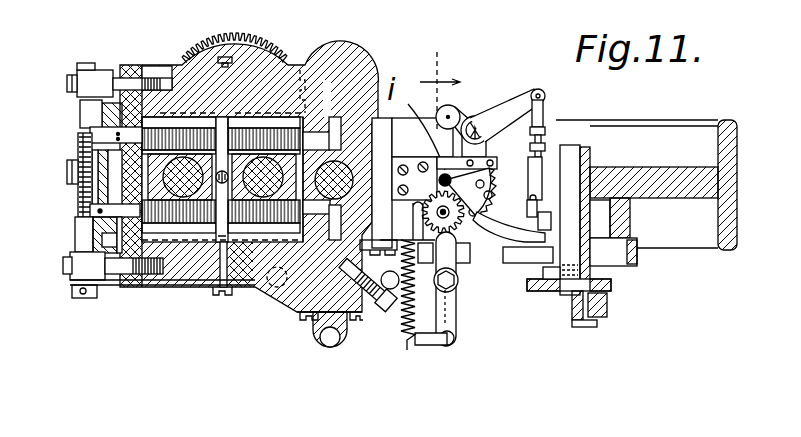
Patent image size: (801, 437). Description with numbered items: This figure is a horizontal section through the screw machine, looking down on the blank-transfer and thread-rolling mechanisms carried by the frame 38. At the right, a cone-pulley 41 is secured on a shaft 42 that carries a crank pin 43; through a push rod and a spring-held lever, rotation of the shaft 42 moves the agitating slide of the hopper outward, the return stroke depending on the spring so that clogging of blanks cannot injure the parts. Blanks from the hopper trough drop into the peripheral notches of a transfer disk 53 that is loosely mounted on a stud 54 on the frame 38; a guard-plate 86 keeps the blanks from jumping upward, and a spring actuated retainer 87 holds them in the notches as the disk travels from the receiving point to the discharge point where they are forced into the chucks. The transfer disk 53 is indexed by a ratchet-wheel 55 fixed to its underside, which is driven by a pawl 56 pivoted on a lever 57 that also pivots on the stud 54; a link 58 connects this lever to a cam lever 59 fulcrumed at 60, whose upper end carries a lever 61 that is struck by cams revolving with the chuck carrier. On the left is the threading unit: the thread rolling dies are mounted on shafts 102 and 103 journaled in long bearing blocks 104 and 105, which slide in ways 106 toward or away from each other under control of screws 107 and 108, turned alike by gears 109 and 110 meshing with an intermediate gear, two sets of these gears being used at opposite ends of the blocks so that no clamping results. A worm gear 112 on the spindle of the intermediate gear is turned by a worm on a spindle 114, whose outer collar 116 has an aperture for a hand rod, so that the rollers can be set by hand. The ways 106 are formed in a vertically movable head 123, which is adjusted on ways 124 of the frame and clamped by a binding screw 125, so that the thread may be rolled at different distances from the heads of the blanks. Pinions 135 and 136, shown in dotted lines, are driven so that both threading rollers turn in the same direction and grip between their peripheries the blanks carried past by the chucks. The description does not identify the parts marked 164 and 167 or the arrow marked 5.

The section line 5 is at (440, 77).
The frame 38 is at (730, 190).
The cone-pulley 41 is at (630, 264).
The shaft 42 is at (567, 177).
The crank pin 43 is at (582, 327).
The transfer disk 53 is at (455, 235).
The stud 54 is at (397, 327).
The ratchet-wheel 55 is at (441, 290).
The pawl 56 is at (397, 316).
The lever 57 is at (493, 220).
The link 58 is at (543, 114).
The cam lever 59 is at (513, 103).
The fulcrum 60 is at (480, 118).
The lever 61 is at (453, 108).
The guard-plate 86 is at (470, 158).
The spring actuated retainer 87 is at (545, 152).
The shaft 102 is at (153, 287).
The shaft 103 is at (255, 289).
The bearing block 104 is at (163, 77).
The bearing block 105 is at (264, 128).
The ways 106 is at (221, 128).
The screw 107 is at (183, 31).
The screw 108 is at (183, 282).
The gear 109 is at (98, 98).
The gear 110 is at (67, 281).
The worm gear 112 is at (79, 143).
The spindle 114 is at (83, 224).
The collar 116 is at (73, 298).
The vertically movable head 123 is at (230, 294).
The ways 124 is at (348, 134).
The binding screw 125 is at (380, 303).
The pinion 135 is at (147, 170).
The pinion 136 is at (304, 128).
The bearing boss 164 is at (322, 343).
The bushing 167 is at (283, 318).